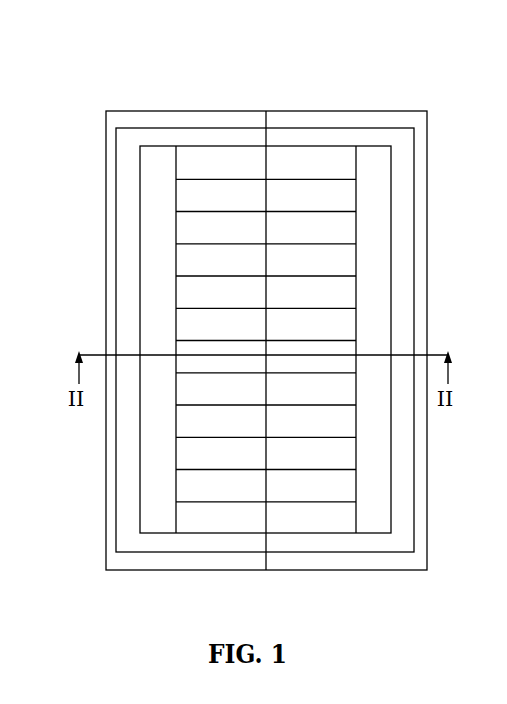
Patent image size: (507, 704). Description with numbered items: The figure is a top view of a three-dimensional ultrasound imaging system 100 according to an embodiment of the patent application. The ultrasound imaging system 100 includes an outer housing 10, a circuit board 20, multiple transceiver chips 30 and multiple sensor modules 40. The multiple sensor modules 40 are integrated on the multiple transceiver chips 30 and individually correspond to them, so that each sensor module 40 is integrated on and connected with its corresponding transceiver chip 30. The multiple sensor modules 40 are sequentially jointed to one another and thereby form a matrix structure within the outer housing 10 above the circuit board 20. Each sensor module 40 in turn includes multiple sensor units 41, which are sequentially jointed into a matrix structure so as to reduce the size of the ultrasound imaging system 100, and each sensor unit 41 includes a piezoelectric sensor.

The 3D ultrasound imaging system 100 is at (255, 34).
The outer housing 10 is at (318, 118).
The circuit board 20 is at (428, 165).
The transceiver chip 30 is at (378, 227).
The sensor module 40 is at (187, 193).
The sensor unit 41 is at (185, 267).